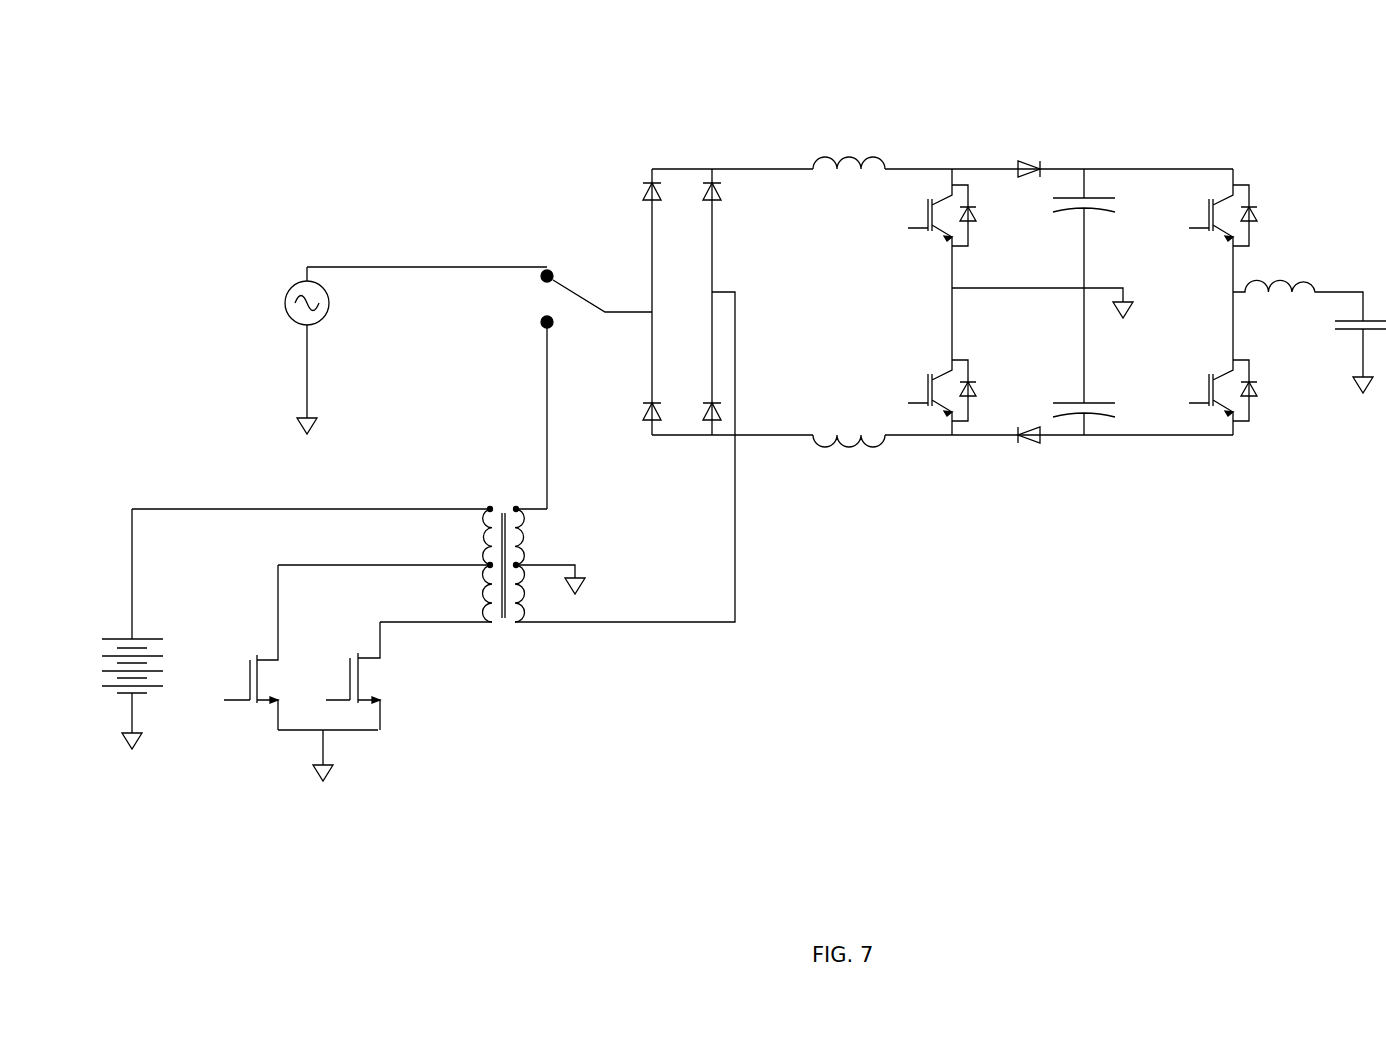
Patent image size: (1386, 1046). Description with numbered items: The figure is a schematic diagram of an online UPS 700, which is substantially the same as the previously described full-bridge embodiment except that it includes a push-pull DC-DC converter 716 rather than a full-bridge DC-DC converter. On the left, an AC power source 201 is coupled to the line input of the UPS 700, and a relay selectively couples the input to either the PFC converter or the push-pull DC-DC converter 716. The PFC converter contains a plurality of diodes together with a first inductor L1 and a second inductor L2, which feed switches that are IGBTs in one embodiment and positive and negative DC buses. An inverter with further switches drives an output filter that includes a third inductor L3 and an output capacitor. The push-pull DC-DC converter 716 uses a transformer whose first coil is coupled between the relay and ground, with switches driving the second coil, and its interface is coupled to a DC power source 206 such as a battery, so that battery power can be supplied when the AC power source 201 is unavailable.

The online UPS 700 is at (200, 97).
The AC power source 201 is at (288, 297).
The DC power source 206 is at (126, 636).
The push-pull DC-DC converter 716 is at (577, 707).
The first inductor L1 is at (849, 143).
The second inductor L2 is at (849, 465).
The third inductor L3 is at (1298, 287).